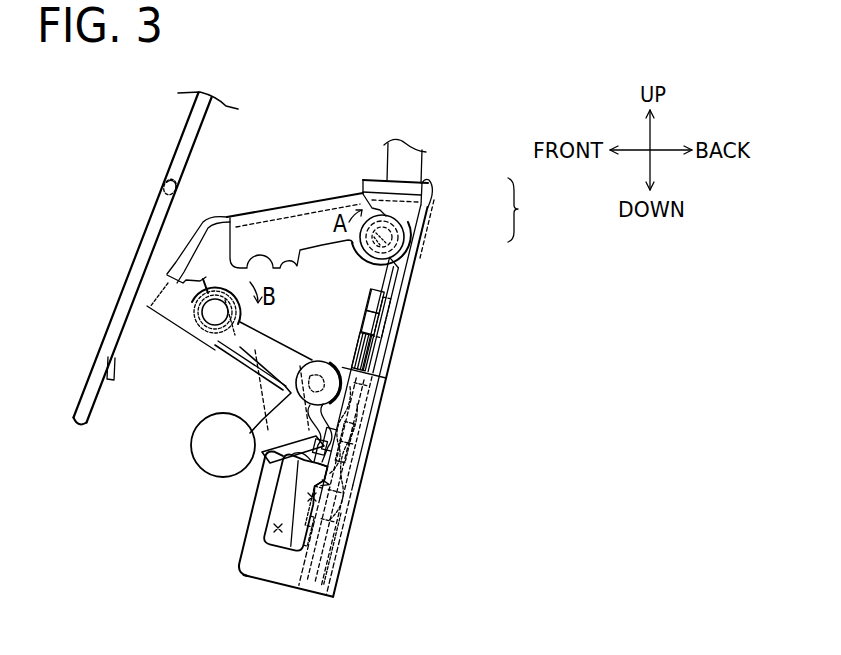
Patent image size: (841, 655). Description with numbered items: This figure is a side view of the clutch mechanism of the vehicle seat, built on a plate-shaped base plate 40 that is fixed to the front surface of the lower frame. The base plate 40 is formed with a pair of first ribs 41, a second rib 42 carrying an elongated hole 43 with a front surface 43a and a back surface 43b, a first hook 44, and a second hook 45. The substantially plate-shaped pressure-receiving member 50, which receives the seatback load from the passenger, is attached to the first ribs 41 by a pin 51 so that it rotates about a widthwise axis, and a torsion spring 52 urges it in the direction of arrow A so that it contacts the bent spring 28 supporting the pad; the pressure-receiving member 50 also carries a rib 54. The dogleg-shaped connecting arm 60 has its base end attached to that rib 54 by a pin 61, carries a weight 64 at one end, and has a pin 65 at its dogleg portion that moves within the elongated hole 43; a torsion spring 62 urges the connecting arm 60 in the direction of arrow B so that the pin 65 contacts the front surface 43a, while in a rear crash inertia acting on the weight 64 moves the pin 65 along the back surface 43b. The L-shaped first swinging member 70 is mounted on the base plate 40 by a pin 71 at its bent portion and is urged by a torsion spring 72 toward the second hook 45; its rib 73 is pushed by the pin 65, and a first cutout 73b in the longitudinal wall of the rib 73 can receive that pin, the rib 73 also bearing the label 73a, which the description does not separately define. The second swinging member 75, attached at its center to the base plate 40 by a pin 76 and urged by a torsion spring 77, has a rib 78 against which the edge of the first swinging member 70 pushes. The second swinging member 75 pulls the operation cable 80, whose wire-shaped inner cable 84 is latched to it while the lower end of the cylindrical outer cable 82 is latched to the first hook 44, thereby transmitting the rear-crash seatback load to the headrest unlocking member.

The bent spring 28 is at (133, 268).
The base plate 40 is at (428, 272).
The first ribs 41 is at (365, 181).
The second rib 42 is at (262, 566).
The elongated hole 43 is at (275, 528).
The front surface of the elongated hole 43a is at (308, 497).
The back surface of the elongated hole 43b is at (335, 478).
The first hook 44 is at (387, 180).
The second hook 45 is at (358, 455).
The pressure-receiving member 50 is at (271, 197).
The pin 51 is at (372, 262).
The torsion spring 52 is at (350, 248).
The rib 54 is at (227, 280).
The connecting arm 60 is at (271, 387).
The pin 61 is at (212, 318).
The torsion spring 62 is at (228, 358).
The weight 64 is at (213, 442).
The pin 65 is at (318, 362).
The first swinging member 70 is at (338, 498).
The pin 71 is at (312, 501).
The torsion spring 72 is at (340, 553).
The rib 73 is at (294, 552).
The lever nose portion 73a is at (278, 462).
The first cutout 73b is at (308, 494).
The second swinging member 75 is at (400, 314).
The pin 76 is at (364, 350).
The torsion spring 77 is at (380, 362).
The rib 78 is at (348, 420).
The operation cable 80 is at (529, 210).
The outer cable 82 is at (412, 163).
The inner cable 84 is at (417, 264).